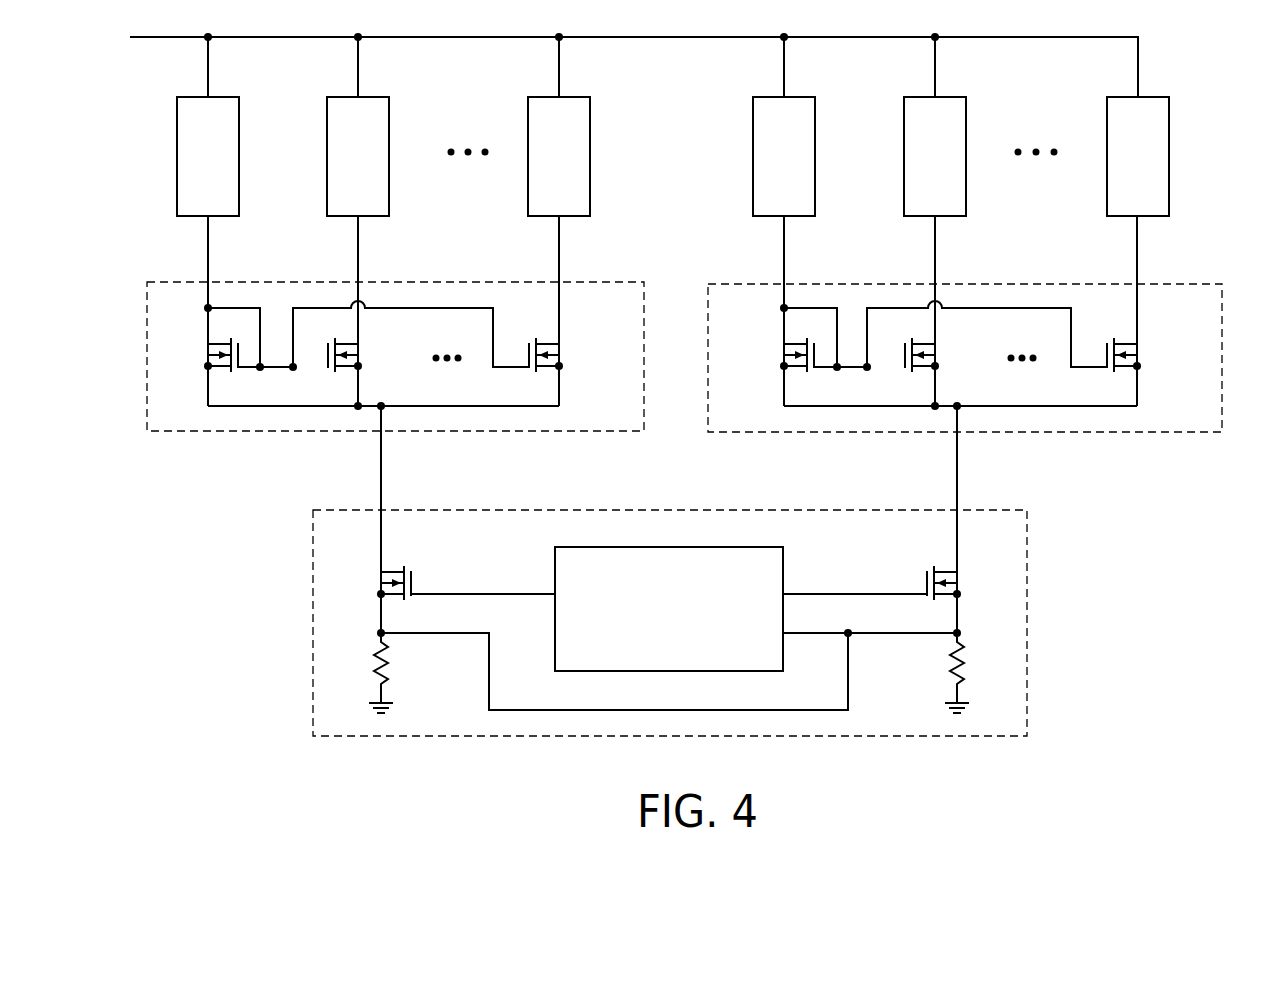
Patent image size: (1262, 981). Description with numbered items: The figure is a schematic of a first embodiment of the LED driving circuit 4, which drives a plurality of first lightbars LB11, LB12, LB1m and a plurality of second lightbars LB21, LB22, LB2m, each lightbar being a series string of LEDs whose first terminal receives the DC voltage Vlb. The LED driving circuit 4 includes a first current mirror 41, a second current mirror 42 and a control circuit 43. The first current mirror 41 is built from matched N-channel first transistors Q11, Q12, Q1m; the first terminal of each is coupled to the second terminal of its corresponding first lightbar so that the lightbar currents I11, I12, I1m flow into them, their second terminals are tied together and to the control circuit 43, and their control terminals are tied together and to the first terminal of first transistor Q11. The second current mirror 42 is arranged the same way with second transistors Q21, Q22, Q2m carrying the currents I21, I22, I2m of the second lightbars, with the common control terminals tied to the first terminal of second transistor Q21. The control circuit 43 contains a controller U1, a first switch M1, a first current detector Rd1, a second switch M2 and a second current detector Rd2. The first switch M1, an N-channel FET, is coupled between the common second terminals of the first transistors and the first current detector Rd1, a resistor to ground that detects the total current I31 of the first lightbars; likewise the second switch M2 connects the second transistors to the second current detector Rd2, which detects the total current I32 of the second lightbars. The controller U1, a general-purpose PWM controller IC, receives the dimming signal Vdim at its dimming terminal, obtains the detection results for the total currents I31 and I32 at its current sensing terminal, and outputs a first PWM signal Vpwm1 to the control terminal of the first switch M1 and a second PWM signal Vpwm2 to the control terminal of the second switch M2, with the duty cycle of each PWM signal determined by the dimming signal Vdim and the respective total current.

The LED driving circuit 4 is at (148, 648).
The first current mirror 41 is at (395, 398).
The second current mirror 42 is at (965, 398).
The control circuit 43 is at (705, 571).
The controller U1 is at (783, 563).
The first lightbar LB11 is at (222, 97).
The first lightbar LB12 is at (372, 97).
The first lightbar LB1m is at (573, 97).
The second lightbar LB21 is at (811, 97).
The second lightbar LB22 is at (955, 97).
The second lightbar LB2m is at (1160, 97).
The first transistor Q11 is at (194, 355).
The first transistor Q12 is at (373, 355).
The first transistor Q1m is at (578, 355).
The second transistor Q21 is at (769, 355).
The second transistor Q22 is at (954, 355).
The second transistor Q2m is at (1156, 355).
The first switch M1 is at (373, 583).
The second switch M2 is at (967, 582).
The first current detector Rd1 is at (360, 673).
The second current detector Rd2 is at (981, 673).
The DC voltage Vlb is at (238, 16).
The dimming signal Vdim is at (667, 530).
The first pulse-width modulation signal Vpwm1 is at (483, 576).
The second PWM signal Vpwm2 is at (855, 576).
The current of first lightbar LB11 I11 is at (225, 225).
The current of first lightbar LB12 I12 is at (375, 225).
The current of first lightbar LB1m I1m is at (576, 225).
The current of second lightbar LB21 I21 is at (801, 225).
The current of second lightbar LB22 I22 is at (952, 225).
The current of second lightbar LB2m I2m is at (1154, 225).
The total current of the first lightbars I31 is at (392, 445).
The total current of the second lightbars I32 is at (970, 445).